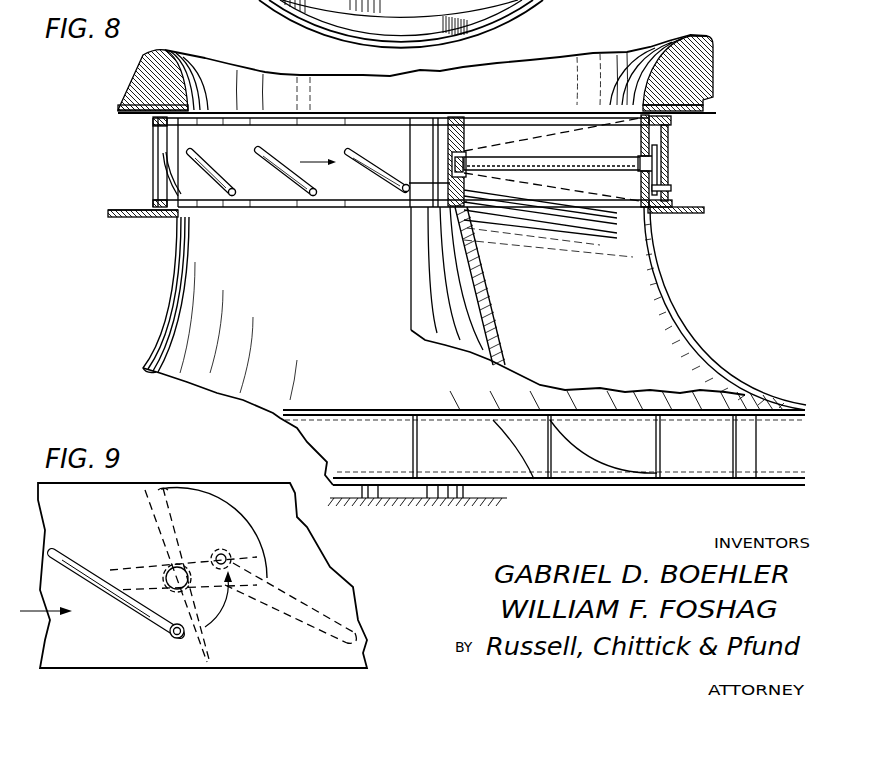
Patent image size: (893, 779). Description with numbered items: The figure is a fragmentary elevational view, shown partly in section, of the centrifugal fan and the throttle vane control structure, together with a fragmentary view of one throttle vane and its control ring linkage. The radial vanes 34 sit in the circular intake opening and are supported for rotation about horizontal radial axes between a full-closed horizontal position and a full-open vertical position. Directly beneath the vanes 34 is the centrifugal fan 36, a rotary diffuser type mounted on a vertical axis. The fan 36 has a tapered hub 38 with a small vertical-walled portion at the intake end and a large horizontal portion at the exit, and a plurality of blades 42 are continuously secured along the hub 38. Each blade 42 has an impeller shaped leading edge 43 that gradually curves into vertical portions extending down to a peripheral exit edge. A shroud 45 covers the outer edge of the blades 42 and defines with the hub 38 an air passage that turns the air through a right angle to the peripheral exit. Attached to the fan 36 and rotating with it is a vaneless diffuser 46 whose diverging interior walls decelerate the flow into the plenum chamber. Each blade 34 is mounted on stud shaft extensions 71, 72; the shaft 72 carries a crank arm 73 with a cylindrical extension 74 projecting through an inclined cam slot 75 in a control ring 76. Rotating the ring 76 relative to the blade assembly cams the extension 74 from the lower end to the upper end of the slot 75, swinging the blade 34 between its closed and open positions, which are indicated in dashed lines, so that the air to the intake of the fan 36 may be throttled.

In FIG. 8, the radial vanes 34 is at (617, 157).
In FIG. 9, the radial vanes 34 is at (133, 568).
In FIG. 8, the centrifugal fan 36 is at (664, 282).
In FIG. 8, the tapered hub 38 is at (475, 357).
In FIG. 8, the blades 42 is at (581, 331).
In FIG. 8, the impeller shaped leading edge 43 is at (612, 214).
In FIG. 8, the shroud 45 is at (685, 355).
In FIG. 8, the vaneless diffuser 46 is at (774, 477).
In FIG. 8, the stud shaft extension 71 is at (461, 152).
In FIG. 8, the stud shaft extension 72 is at (637, 170).
In FIG. 9, the stud shaft extension 72 is at (190, 562).
In FIG. 8, the crank arm 73 is at (655, 178).
In FIG. 9, the crank arm 73 is at (171, 634).
In FIG. 8, the cylindrical extension 74 is at (673, 189).
In FIG. 9, the cylindrical extension 74 is at (181, 640).
In FIG. 8, the inclined cam slot 75 is at (363, 152).
In FIG. 9, the inclined cam slot 75 is at (132, 607).
In FIG. 8, the control ring 76 is at (168, 141).
In FIG. 9, the control ring 76 is at (259, 497).